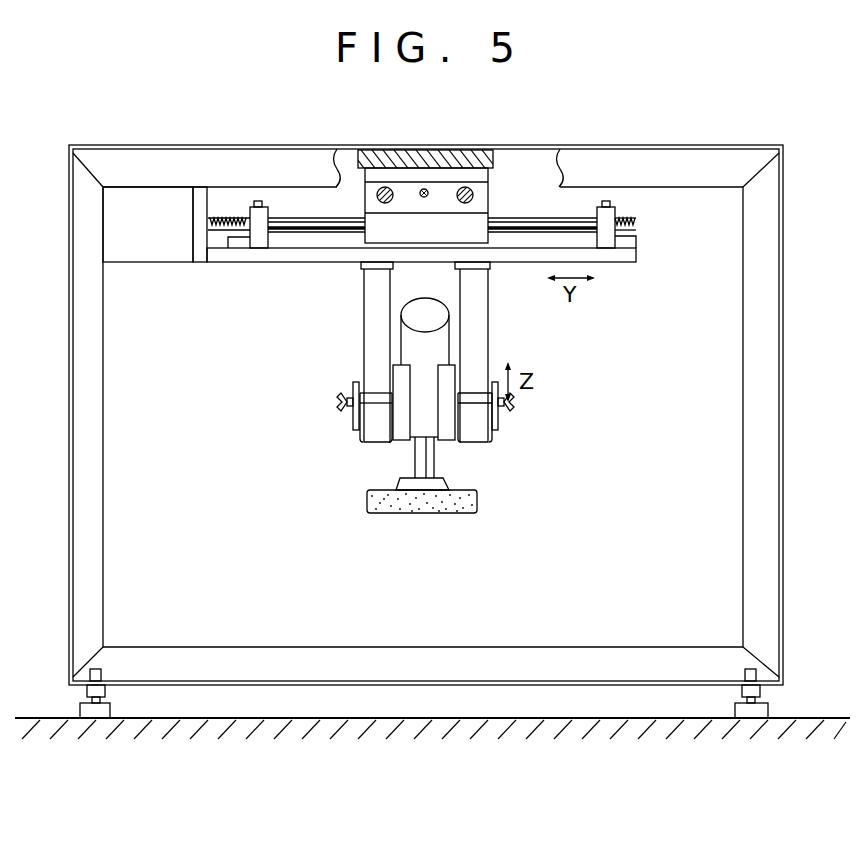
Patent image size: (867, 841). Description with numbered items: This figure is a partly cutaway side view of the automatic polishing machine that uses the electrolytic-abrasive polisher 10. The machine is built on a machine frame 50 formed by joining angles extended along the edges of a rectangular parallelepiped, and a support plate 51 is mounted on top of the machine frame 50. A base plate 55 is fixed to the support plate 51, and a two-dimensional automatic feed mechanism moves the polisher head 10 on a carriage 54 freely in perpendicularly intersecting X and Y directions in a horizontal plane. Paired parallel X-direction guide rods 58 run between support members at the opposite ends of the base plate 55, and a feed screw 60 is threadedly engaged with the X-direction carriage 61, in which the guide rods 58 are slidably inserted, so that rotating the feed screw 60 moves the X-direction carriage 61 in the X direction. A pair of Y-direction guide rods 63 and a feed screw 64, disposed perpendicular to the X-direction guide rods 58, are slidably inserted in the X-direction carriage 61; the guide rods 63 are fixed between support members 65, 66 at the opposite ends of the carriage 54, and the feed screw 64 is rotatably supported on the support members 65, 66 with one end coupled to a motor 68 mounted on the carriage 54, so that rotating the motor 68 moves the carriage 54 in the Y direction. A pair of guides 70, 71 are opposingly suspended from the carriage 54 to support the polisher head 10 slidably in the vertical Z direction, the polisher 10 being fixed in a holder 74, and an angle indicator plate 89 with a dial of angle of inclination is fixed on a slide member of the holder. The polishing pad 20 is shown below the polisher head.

The electrolytic-abrasive polisher 10 is at (398, 316).
The abrasive pad 20 is at (362, 500).
The machine frame 50 is at (774, 231).
The support plate 51 is at (546, 147).
The carriage 54 is at (521, 263).
The base plate 55 is at (455, 160).
The X-direction guide rods 58 is at (377, 196).
The feed screw 60 is at (423, 190).
The X-direction carriage 61 is at (480, 205).
The Y-direction guide rods 63 is at (287, 229).
The feed screw 64 is at (221, 231).
The support member 65 is at (253, 203).
The support member 66 is at (613, 212).
The motor 68 is at (153, 252).
The guide 70 is at (366, 355).
The guide 71 is at (480, 330).
The holder 74 is at (443, 448).
The angle indicator plate 89 is at (357, 430).